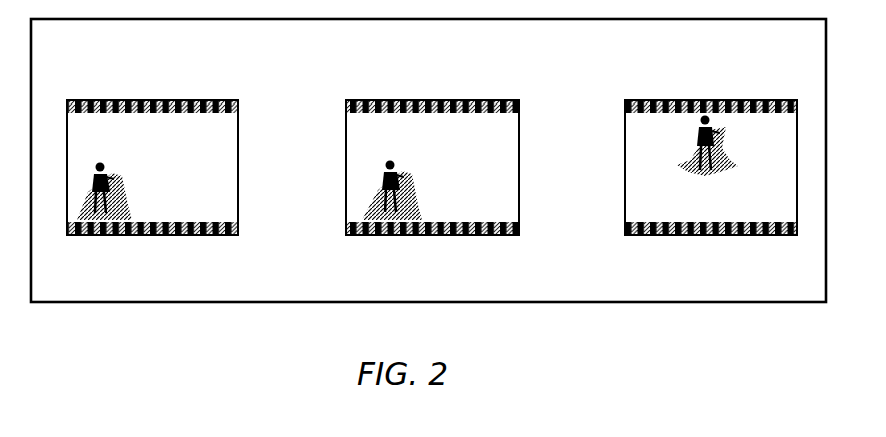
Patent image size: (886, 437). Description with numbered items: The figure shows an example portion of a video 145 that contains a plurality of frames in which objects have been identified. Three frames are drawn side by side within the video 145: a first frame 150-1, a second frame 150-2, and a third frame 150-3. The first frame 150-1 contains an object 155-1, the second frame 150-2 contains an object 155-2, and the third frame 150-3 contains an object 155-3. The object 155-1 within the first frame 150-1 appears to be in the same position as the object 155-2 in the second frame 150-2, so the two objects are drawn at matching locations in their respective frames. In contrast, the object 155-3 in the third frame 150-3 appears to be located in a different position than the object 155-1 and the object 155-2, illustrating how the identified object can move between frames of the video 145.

The video 145 is at (428, 160).
The first frame 150-1 is at (152, 167).
The second frame 150-2 is at (432, 167).
The third frame 150-3 is at (711, 167).
The object 155-1 is at (131, 195).
The object 155-2 is at (419, 198).
The object 155-3 is at (712, 190).